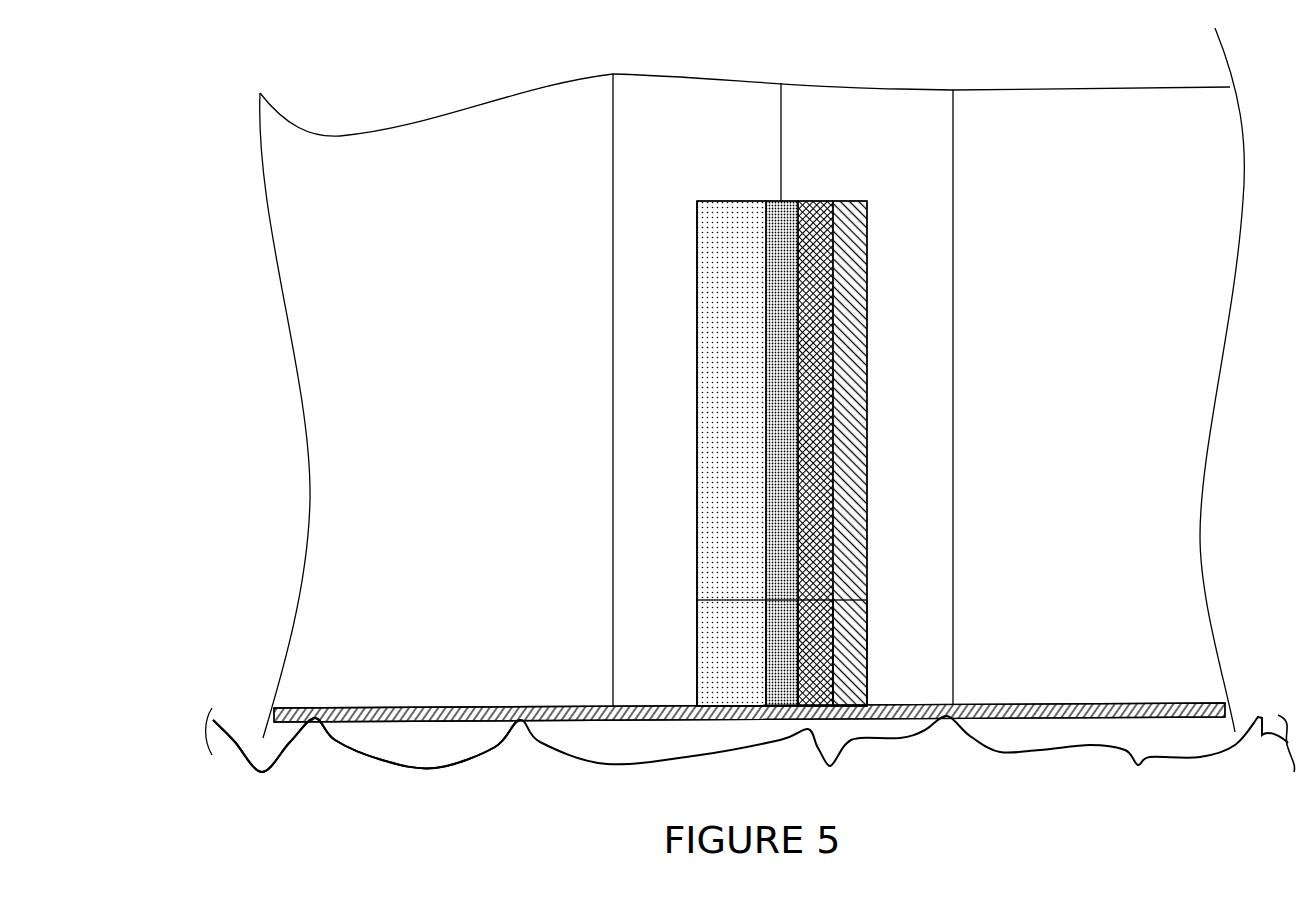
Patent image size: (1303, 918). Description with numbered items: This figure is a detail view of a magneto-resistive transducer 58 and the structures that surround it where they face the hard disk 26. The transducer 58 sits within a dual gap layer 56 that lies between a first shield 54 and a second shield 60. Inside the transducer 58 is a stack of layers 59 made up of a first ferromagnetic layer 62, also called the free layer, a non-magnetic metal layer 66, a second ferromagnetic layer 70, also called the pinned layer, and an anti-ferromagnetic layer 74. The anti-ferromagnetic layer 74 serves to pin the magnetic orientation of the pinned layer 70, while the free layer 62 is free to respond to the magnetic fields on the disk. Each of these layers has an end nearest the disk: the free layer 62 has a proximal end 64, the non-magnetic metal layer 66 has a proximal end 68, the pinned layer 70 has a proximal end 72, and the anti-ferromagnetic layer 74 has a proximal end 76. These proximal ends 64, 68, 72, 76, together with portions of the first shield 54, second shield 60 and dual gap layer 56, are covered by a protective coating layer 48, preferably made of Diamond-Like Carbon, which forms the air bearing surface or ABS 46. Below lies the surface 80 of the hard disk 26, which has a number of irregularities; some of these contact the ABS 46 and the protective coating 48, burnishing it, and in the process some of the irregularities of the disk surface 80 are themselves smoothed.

The hard disk 26 is at (509, 779).
The ABS 46 is at (1120, 698).
The protective coating layer 48 is at (547, 715).
The first shield 54 is at (431, 499).
The dual gap layer 56 is at (646, 118).
The magneto-resistive transducer 58 is at (888, 327).
The stack of layers 59 is at (678, 397).
The second shield 60 is at (1034, 502).
The first ferromagnetic layer 62 is at (733, 212).
The proximal end 64 is at (735, 684).
The non-magnetic metal layer 66 is at (779, 215).
The proximal end 68 is at (783, 684).
The second ferromagnetic layer 70 is at (812, 215).
The proximal end 72 is at (818, 684).
The anti-ferromagnetic layer 74 is at (846, 215).
The proximal end 76 is at (855, 684).
The surface 80 is at (448, 748).